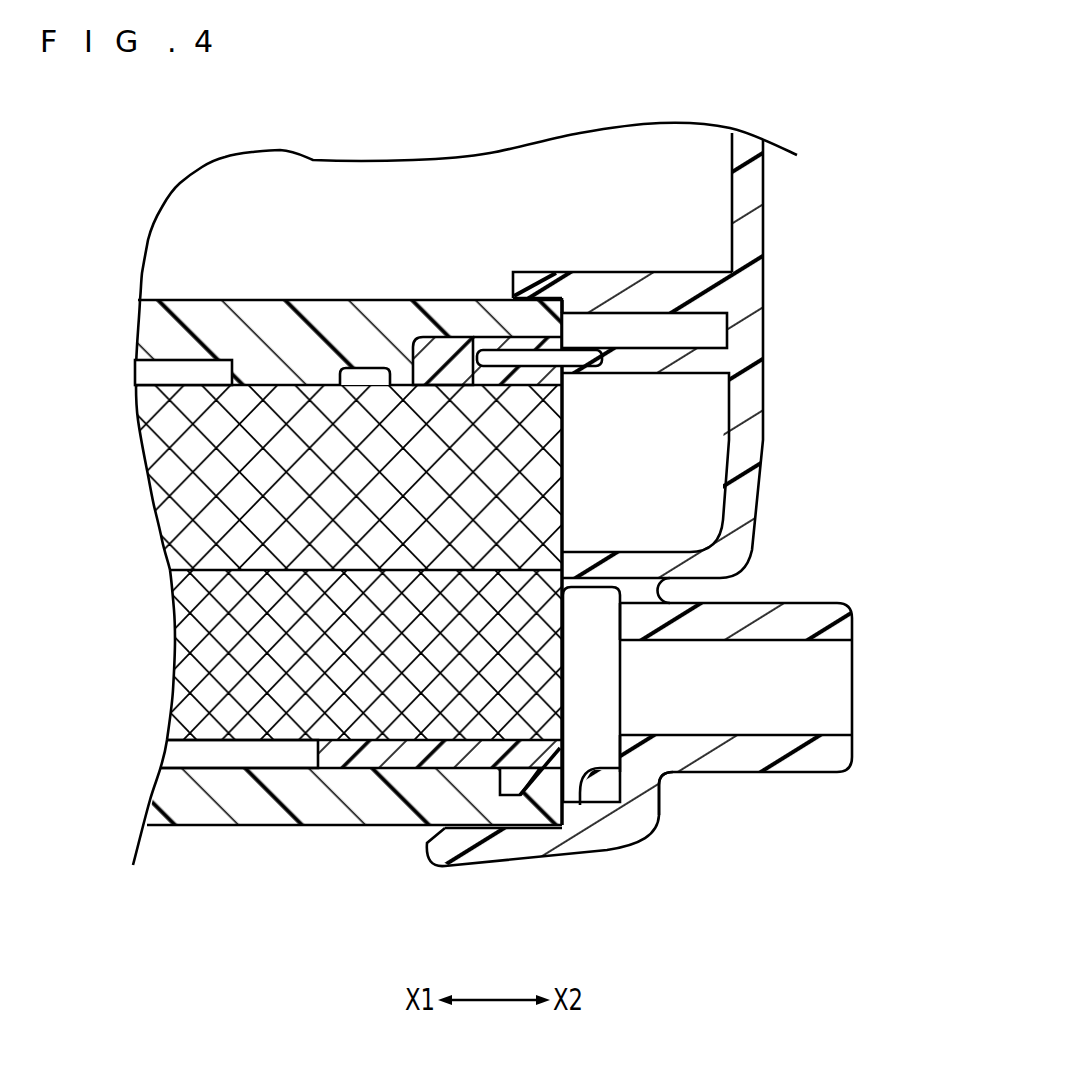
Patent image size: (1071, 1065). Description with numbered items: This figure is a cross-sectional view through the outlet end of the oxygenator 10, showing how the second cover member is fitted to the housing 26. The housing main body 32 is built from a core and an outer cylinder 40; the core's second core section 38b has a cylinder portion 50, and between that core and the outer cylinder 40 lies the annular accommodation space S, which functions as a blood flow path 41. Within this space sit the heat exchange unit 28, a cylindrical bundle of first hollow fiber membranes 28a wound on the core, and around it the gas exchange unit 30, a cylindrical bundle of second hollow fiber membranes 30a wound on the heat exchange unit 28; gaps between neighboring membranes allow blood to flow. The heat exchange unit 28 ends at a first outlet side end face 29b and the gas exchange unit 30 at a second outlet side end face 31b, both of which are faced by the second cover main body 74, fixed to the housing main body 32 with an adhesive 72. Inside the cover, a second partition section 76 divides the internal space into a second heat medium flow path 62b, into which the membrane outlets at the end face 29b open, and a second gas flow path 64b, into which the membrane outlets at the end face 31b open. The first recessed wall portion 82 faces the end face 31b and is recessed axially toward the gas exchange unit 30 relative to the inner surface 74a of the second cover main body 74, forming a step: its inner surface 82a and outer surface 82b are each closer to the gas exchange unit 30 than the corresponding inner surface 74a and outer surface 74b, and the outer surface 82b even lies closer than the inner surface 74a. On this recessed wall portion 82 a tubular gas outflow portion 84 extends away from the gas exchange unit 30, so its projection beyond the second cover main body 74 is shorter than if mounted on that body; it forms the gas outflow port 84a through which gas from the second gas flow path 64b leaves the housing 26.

The oxygenator 10 is at (282, 96).
The housing 26 is at (200, 862).
The heat exchange unit 28 is at (305, 477).
The first hollow fiber membrane 28a is at (178, 476).
The first outlet side end face 29b is at (563, 467).
The gas exchange unit 30 is at (315, 655).
The second hollow fiber membrane 30a is at (193, 612).
The second outlet side end face 31b is at (563, 670).
The housing main body 32 is at (354, 833).
The outer cylinder 40 is at (354, 828).
The blood flow path 41 is at (239, 817).
The accommodation space S is at (288, 758).
The cylinder portion 50 is at (368, 303).
The second core section 38b is at (275, 318).
The second heat medium flow path 62b is at (680, 433).
The second gas flow path 64b is at (597, 711).
The adhesive 72 is at (530, 792).
The second cover main body 74 is at (687, 368).
The inner surface of the second cover main body 74a is at (735, 190).
The outer surface of the second cover main body 74b is at (765, 230).
The second partition section 76 is at (580, 563).
The first recessed wall portion 82 is at (588, 842).
The inner surface of the first recessed wall portion 82a is at (580, 805).
The outer surface of the first recessed wall portion 82b is at (660, 790).
The gas outflow portion 84 is at (777, 669).
The gas outflow port 84a is at (825, 690).